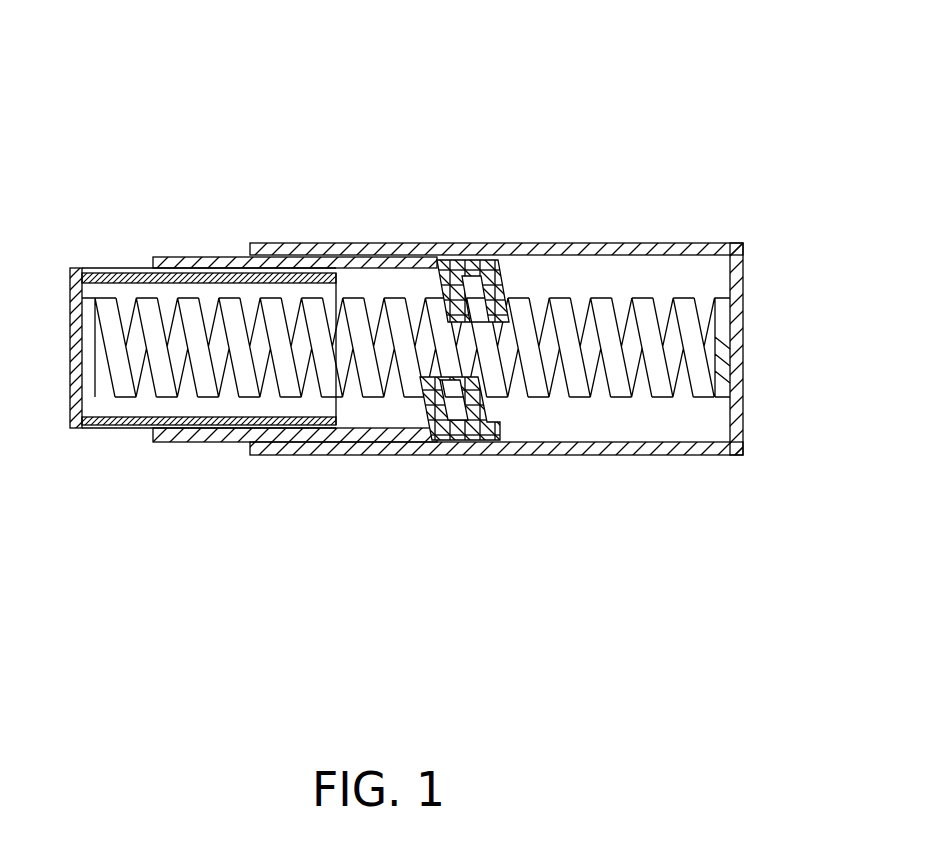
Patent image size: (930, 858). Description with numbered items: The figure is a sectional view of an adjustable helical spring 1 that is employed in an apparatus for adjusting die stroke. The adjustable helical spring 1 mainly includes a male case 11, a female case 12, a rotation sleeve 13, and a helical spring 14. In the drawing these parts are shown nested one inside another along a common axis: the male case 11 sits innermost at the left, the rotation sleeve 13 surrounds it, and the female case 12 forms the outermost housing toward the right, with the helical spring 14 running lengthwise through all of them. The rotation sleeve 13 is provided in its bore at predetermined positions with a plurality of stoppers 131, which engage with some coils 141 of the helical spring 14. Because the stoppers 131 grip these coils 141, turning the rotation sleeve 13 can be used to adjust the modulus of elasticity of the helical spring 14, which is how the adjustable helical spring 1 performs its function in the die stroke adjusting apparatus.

The adjustable helical spring 1 is at (578, 133).
The male case 11 is at (78, 328).
The female case 12 is at (633, 250).
The rotation sleeve 13 is at (200, 263).
The stoppers 131 is at (458, 275).
The helical spring 14 is at (662, 387).
The coils 141 is at (603, 387).